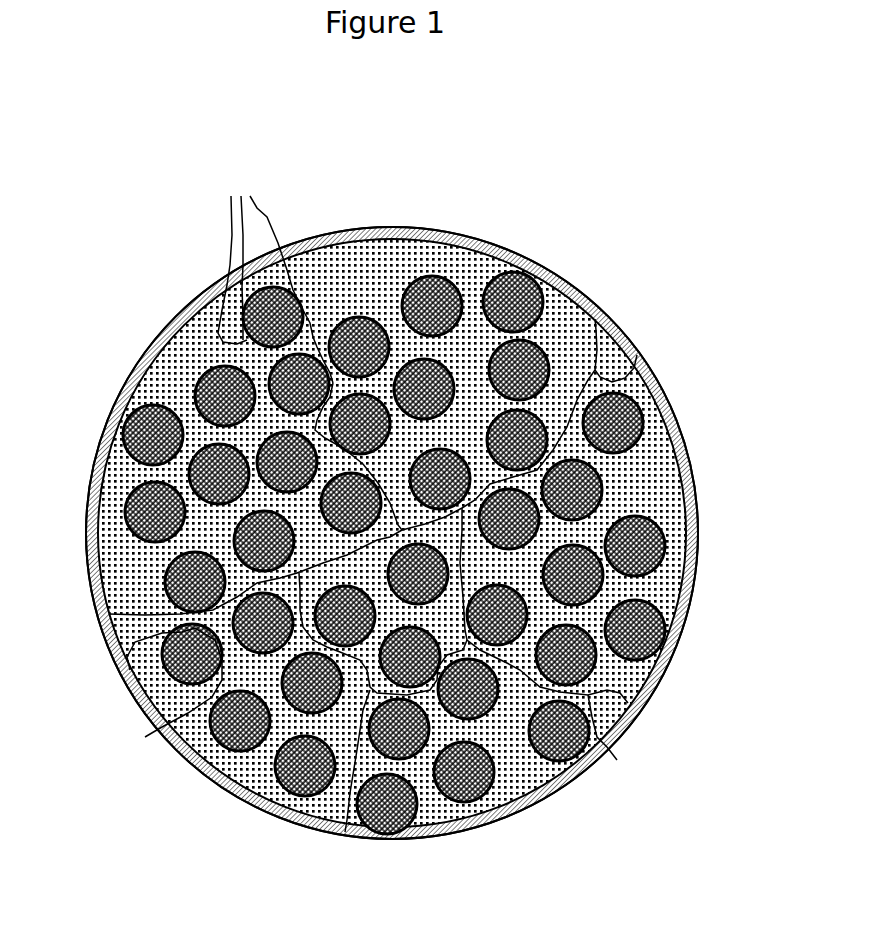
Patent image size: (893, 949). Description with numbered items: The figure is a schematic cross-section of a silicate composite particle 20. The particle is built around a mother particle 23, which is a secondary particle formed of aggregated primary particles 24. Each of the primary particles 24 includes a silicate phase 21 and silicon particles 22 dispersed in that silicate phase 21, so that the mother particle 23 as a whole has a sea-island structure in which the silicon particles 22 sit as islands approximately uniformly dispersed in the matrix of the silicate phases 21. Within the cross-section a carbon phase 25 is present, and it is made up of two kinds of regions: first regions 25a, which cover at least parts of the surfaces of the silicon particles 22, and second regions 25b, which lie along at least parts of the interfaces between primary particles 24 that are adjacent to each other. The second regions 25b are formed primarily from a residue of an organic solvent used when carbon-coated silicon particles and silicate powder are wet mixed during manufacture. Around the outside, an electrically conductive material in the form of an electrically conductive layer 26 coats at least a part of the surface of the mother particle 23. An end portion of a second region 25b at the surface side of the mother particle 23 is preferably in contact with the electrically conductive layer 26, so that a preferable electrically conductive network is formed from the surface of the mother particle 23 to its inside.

The silicate composite particle 20 is at (447, 157).
The silicate phase 21 is at (507, 767).
The silicon particles 22 is at (446, 796).
The mother particle 23 is at (666, 403).
The primary particles 24 is at (147, 388).
The carbon phase 25 is at (200, 152).
The first regions 25a is at (100, 737).
The second regions 25b is at (333, 383).
The electrically conductive layer 26 is at (523, 254).